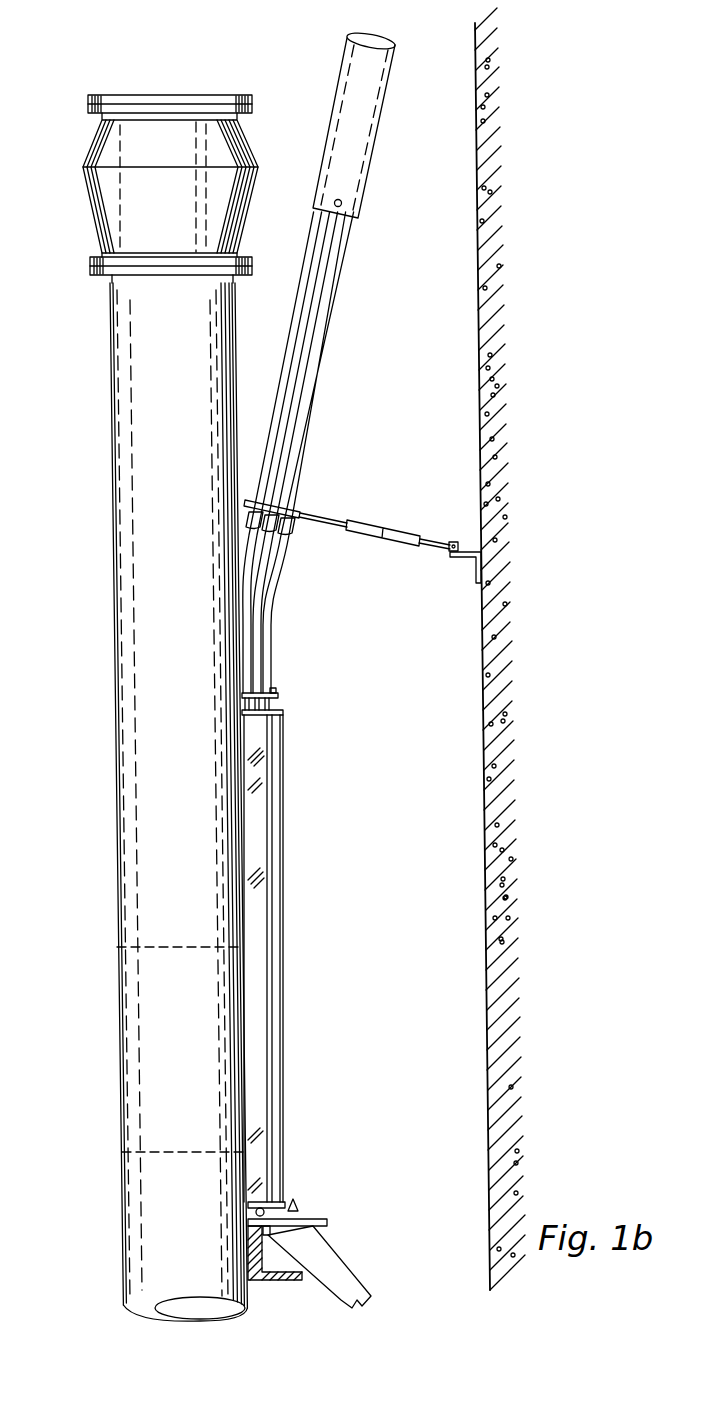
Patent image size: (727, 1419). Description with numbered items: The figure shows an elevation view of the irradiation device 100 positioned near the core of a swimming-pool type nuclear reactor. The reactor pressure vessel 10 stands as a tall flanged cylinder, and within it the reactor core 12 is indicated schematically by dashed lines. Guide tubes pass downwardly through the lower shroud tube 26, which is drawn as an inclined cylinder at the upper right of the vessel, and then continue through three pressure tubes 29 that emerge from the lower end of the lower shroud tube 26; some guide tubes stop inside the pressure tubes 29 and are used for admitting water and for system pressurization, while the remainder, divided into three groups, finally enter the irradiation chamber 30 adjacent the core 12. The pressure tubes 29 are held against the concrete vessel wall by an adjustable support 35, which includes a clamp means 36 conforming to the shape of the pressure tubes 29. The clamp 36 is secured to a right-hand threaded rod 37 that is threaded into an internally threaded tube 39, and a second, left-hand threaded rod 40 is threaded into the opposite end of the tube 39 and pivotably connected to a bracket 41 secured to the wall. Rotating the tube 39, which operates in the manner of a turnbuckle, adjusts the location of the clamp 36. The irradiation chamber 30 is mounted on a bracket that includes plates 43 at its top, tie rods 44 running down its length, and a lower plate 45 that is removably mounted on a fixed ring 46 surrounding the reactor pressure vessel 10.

The reactor pressure vessel 10 is at (247, 212).
The reactor core 12 is at (165, 945).
The lower shroud tube 26 is at (343, 60).
The pressure tubes 29 is at (322, 322).
The irradiation chamber 30 is at (270, 788).
The adjustable support 35 is at (407, 493).
The clamp means 36 is at (292, 508).
The right-hand threaded rod 37 is at (312, 523).
The internally threaded tube 39 is at (358, 523).
The left-hand threaded rod 40 is at (435, 538).
The bracket 41 is at (467, 562).
The plates 43 is at (270, 692).
The tie rods 44 is at (283, 892).
The lower plate 45 is at (287, 1202).
The fixed ring 46 is at (323, 1220).
The irradiation device 100 is at (373, 342).